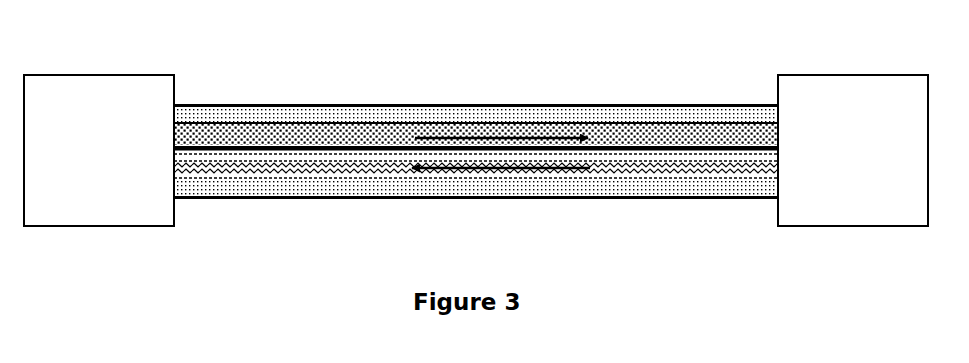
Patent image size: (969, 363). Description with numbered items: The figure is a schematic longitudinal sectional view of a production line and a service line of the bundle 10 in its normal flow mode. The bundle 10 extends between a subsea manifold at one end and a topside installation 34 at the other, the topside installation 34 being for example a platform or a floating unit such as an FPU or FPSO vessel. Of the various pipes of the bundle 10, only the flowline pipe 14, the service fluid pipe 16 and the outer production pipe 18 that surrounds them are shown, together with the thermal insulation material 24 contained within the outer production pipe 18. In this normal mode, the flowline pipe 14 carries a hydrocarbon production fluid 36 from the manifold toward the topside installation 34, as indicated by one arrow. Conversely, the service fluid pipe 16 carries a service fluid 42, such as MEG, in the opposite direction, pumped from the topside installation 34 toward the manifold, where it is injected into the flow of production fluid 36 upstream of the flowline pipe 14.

The bundle 10 is at (246, 43).
The flowline pipe 14 is at (704, 122).
The service fluid pipe 16 is at (672, 181).
The outer production pipe 18 is at (325, 104).
The thermal insulation material 24 is at (531, 112).
The topside installation 34 is at (878, 86).
The hydrocarbon production fluid 36 is at (384, 137).
The service fluid 42 is at (318, 172).